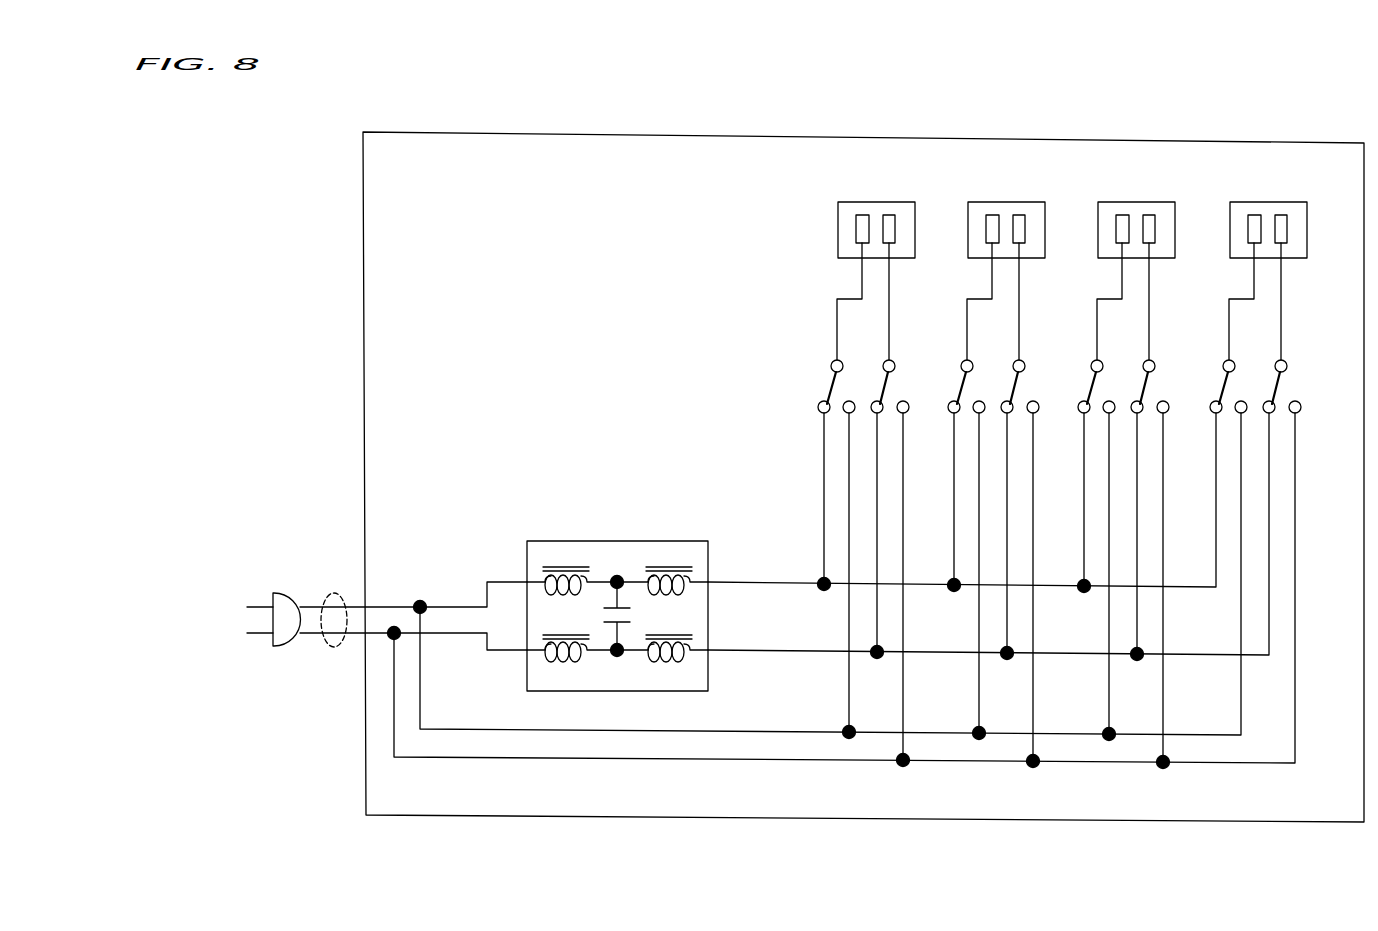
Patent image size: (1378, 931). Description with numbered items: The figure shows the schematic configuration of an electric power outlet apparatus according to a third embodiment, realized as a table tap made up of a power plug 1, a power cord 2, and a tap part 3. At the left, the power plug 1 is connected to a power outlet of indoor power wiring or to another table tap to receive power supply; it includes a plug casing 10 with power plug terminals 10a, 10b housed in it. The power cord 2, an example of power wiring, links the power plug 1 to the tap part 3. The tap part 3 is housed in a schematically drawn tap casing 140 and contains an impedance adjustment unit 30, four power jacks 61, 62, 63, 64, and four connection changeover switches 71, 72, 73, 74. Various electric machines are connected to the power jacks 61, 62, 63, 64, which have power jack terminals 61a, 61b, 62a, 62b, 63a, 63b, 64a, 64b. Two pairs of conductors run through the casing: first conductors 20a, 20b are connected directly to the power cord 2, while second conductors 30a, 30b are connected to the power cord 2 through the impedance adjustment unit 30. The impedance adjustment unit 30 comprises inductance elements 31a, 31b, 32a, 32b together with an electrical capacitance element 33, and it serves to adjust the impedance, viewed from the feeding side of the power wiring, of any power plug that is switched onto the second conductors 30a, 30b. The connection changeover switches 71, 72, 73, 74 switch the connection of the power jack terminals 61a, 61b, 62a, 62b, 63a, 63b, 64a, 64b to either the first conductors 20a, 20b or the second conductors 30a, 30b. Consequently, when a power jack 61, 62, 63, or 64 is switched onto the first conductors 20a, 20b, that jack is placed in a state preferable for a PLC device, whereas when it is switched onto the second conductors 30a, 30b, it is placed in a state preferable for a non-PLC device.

The power plug 1 is at (285, 526).
The power cord 2 is at (337, 648).
The tap part 3 is at (836, 99).
The plug casing 10 is at (284, 648).
The power plug terminal 10a is at (252, 604).
The power plug terminal 10b is at (256, 640).
The first conductor 20a is at (1200, 734).
The first conductor 20b is at (1212, 765).
The impedance adjustment unit 30 is at (598, 542).
The second conductor 30a is at (1192, 586).
The second conductor 30b is at (1200, 654).
The inductance element 31a is at (556, 572).
The inductance element 31b is at (550, 662).
The inductance element 32a is at (685, 574).
The inductance element 32b is at (688, 662).
The electrical capacitance element 33 is at (638, 612).
The power jack 61 is at (1250, 202).
The power jack terminal 61a is at (1250, 232).
The power jack terminal 61b is at (1287, 228).
The power jack 62 is at (1118, 202).
The power jack terminal 62a is at (1118, 232).
The power jack terminal 62b is at (1155, 228).
The power jack 63 is at (988, 202).
The power jack terminal 63a is at (988, 232).
The power jack terminal 63b is at (1025, 228).
The power jack 64 is at (858, 202).
The power jack terminal 64a is at (858, 232).
The power jack terminal 64b is at (895, 228).
The connection changeover switch 71 is at (1290, 392).
The connection changeover switch 72 is at (1158, 392).
The connection changeover switch 73 is at (1028, 392).
The connection changeover switch 74 is at (898, 392).
The tap casing 140 is at (500, 132).